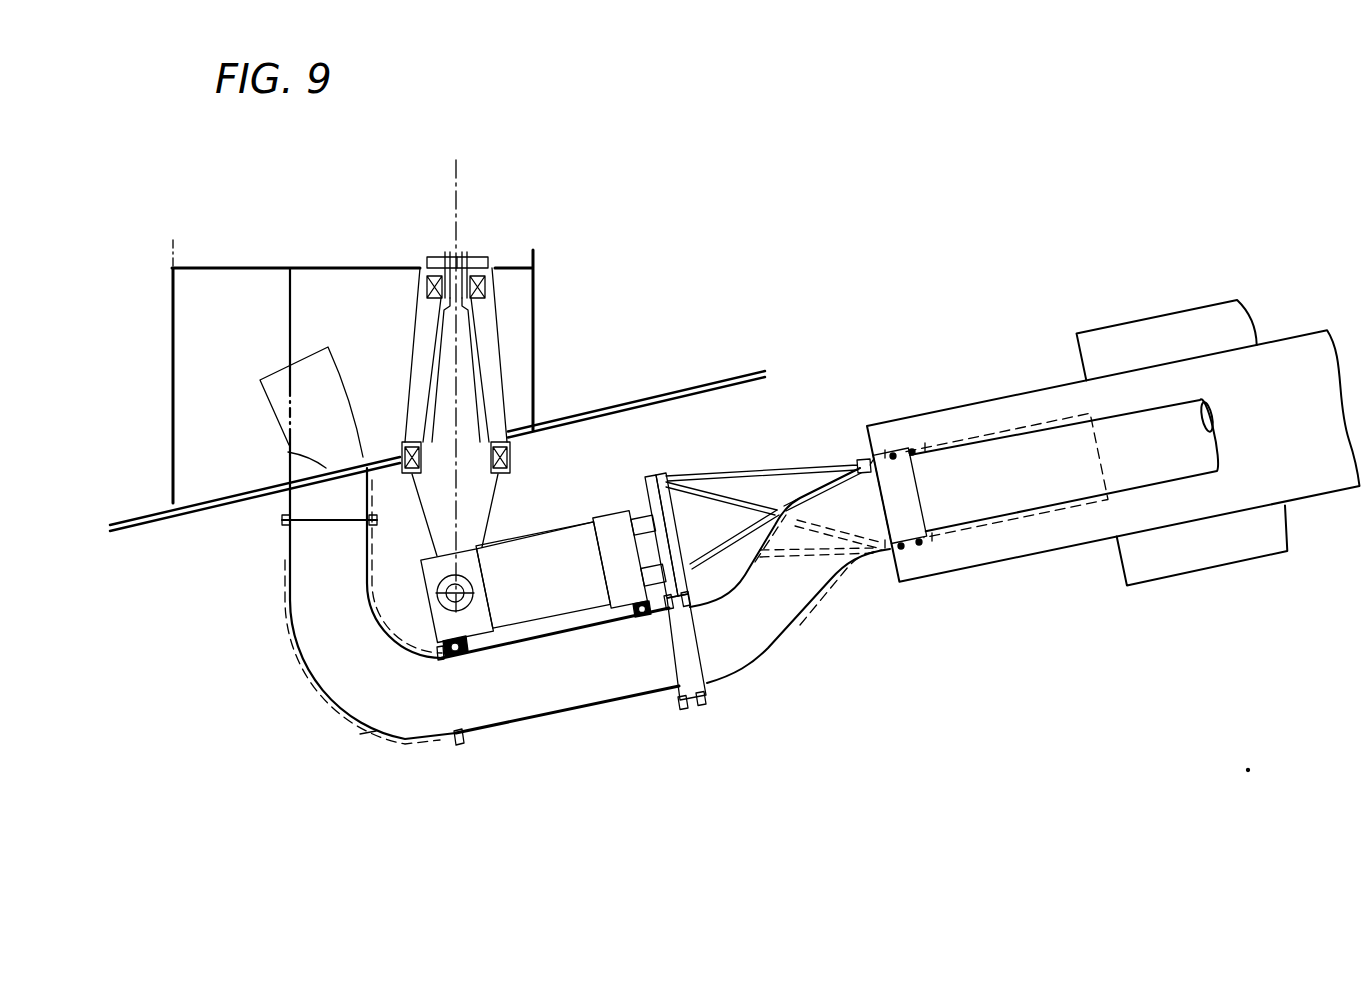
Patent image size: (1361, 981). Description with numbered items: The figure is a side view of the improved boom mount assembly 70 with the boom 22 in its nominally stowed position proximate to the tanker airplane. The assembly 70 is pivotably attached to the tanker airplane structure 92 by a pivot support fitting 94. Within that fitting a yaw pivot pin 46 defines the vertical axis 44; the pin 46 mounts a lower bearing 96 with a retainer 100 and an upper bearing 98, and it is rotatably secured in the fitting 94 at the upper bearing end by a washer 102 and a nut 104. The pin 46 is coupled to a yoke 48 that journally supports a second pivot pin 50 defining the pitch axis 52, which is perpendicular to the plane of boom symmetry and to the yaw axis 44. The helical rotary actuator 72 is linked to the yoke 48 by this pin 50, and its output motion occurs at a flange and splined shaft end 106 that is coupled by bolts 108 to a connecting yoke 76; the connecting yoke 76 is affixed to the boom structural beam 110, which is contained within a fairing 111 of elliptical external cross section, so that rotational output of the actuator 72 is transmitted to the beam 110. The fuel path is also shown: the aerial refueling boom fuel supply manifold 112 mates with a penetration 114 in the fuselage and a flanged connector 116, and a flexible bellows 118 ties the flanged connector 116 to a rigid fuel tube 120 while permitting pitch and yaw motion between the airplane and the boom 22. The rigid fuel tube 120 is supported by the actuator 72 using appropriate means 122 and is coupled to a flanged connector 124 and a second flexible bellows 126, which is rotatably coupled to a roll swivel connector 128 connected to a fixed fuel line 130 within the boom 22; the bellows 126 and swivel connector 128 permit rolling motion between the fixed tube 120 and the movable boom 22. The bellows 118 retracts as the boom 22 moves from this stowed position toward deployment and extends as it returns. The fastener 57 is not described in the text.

The boom 22 is at (1090, 272).
The vertical axis 44 is at (457, 172).
The yaw pivot pin 46 is at (500, 343).
The yoke 48 is at (488, 523).
The second pivot pin 50 is at (485, 613).
The pitch axis 52 is at (486, 615).
The fastener 57 is at (452, 653).
The boom mount assembly 70 is at (628, 238).
The rotary actuator 72 is at (568, 523).
The connecting yoke 76 is at (790, 463).
The tanker airplane structure 92 is at (152, 522).
The pivot support fitting 94 is at (504, 384).
The lower bearing 96 is at (402, 424).
The upper bearing 98 is at (426, 270).
The retainer 100 is at (417, 388).
The washer 102 is at (489, 258).
The nut 104 is at (432, 257).
The flange and splined shaft end 106 is at (630, 510).
The bolts 108 is at (681, 477).
The boom structural beam 110 is at (1007, 393).
The fairing 111 is at (1127, 585).
The aerial refueling boom fuel supply manifold 112 is at (263, 385).
The penetration 114 is at (288, 452).
The flanged connector 116 is at (289, 503).
The flexible bellows 118 is at (290, 608).
The rigid fuel tube 120 is at (510, 724).
The means 122 is at (368, 735).
The flanged connector 124 is at (700, 698).
The second flexible bellows 126 is at (790, 636).
The roll swivel connector 128 is at (893, 453).
The fixed fuel line 130 is at (1193, 397).